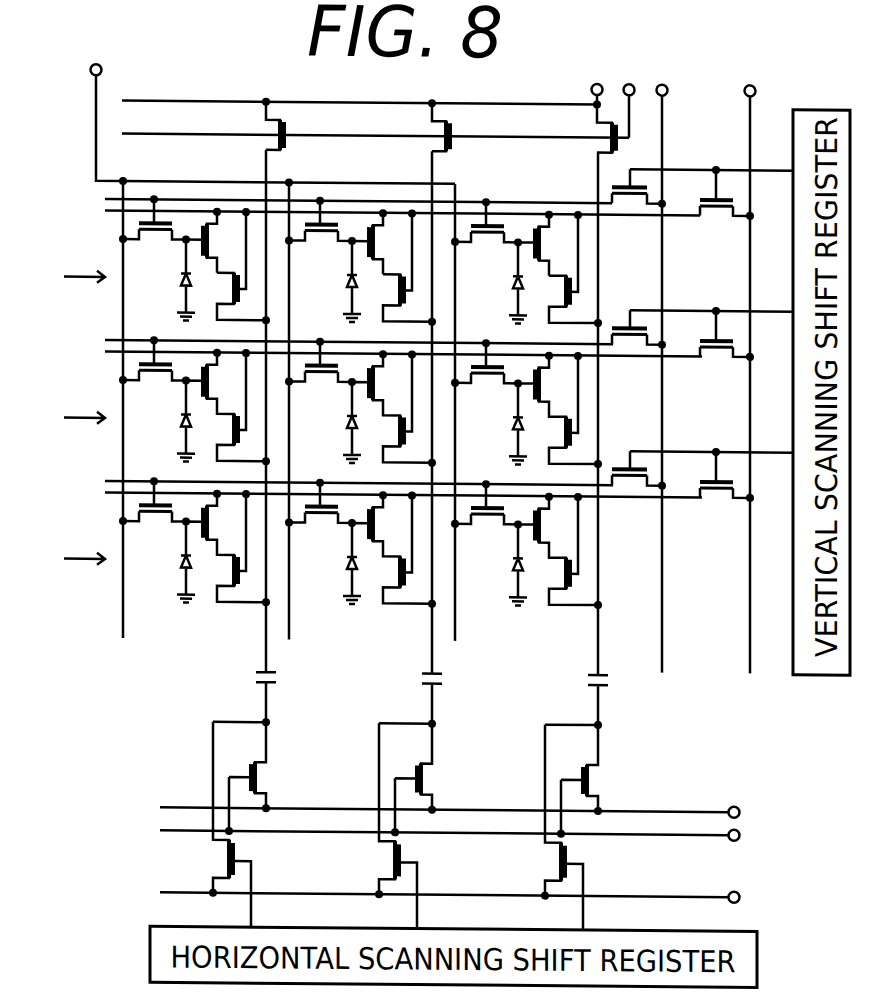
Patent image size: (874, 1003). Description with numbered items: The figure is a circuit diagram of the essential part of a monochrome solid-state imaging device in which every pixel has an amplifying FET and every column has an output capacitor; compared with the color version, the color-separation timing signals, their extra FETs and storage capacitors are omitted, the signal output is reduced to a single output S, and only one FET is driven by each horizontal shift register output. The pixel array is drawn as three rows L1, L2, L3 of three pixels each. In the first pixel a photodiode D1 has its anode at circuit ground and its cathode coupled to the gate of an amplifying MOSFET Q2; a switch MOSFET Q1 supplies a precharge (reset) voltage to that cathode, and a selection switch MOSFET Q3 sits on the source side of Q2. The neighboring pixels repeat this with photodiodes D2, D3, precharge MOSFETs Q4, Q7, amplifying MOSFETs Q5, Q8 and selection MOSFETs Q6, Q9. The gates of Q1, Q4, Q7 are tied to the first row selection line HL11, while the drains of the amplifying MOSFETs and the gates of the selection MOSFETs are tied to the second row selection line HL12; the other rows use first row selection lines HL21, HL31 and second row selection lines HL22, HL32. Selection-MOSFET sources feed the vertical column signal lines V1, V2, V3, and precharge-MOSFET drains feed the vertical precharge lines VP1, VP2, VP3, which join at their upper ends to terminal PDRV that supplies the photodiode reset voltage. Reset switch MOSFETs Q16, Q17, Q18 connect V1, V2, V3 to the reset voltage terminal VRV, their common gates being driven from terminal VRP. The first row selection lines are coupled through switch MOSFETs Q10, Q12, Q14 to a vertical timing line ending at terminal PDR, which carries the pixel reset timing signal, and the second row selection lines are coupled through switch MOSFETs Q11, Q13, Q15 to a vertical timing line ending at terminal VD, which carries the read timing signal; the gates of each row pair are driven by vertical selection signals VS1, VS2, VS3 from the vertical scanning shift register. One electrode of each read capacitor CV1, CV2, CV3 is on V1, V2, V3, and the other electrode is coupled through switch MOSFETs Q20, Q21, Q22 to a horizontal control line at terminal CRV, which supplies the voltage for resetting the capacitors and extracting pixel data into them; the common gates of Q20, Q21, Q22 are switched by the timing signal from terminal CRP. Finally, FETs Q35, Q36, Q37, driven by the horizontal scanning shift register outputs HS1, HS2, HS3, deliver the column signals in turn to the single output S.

The precharge terminal PDRV is at (261, 107).
The reset voltage terminal VRV is at (593, 65).
The reset signal terminal VRP is at (626, 81).
The reset timing signal terminal PDR is at (659, 351).
The read timing signal terminal VD is at (747, 358).
The switch MOSFET for precharge Q1 is at (154, 233).
The amplifying MOSFET Q2 is at (212, 240).
The switch MOSFET for selection Q3 is at (234, 266).
The photodiode D1 is at (174, 279).
The switch MOSFET for precharge Q4 is at (320, 234).
The amplifying MOSFET Q5 is at (378, 241).
The switch MOSFET for read operation Q6 is at (400, 267).
The photodiode D2 is at (340, 281).
The switch MOSFET for precharge Q7 is at (486, 236).
The amplifying MOSFET Q8 is at (544, 242).
The switch MOSFET for read operation Q9 is at (566, 269).
The photodiode D3 is at (506, 282).
The switch MOSFET Q10 is at (638, 208).
The switch MOSFET Q11 is at (727, 208).
The switch MOSFET Q12 is at (637, 349).
The switch MOSFET Q13 is at (725, 350).
The switch MOSFET Q14 is at (637, 490).
The switch MOSFET Q15 is at (725, 491).
The switch MOSFET for reset Q16 is at (251, 136).
The switch MOSFET for reset Q17 is at (417, 137).
The switch MOSFET for reset Q18 is at (584, 137).
The switch MOSFET Q20 is at (260, 777).
The switch MOSFET Q21 is at (426, 778).
The switch MOSFET Q22 is at (592, 780).
The FET driven by horizontal shift register Q35 is at (205, 809).
The FET driven by horizontal shift register Q36 is at (371, 810).
The FET driven by horizontal shift register Q37 is at (537, 811).
The first row selection line HL11 is at (317, 194).
The second row selection line HL12 is at (361, 224).
The first row selection line HL21 is at (317, 335).
The second row selection line HL22 is at (362, 365).
The first row selection line HL31 is at (317, 476).
The second row selection line HL32 is at (362, 506).
The pixel row L1 is at (63, 277).
The pixel row L2 is at (63, 418).
The pixel row L3 is at (63, 559).
The precharge line VP1 is at (146, 423).
The precharge line VP2 is at (312, 424).
The precharge line VP3 is at (478, 426).
The column signal line V1 is at (249, 410).
The column signal line V2 is at (415, 412).
The column signal line V3 is at (581, 413).
The capacitor for read operation CV1 is at (238, 697).
The capacitor for read operation CV2 is at (404, 698).
The capacitor for read operation CV3 is at (570, 700).
The vertical selection signal VS1 is at (711, 155).
The vertical selection signal VS2 is at (711, 296).
The vertical selection signal VS3 is at (711, 437).
The horizontal shift register output HS1 is at (259, 880).
The horizontal shift register output HS2 is at (425, 881).
The horizontal shift register output HS3 is at (591, 883).
The capacitor reset voltage terminal CRV is at (476, 809).
The capacitor reset timing terminal CRP is at (476, 830).
The signal output S is at (461, 891).